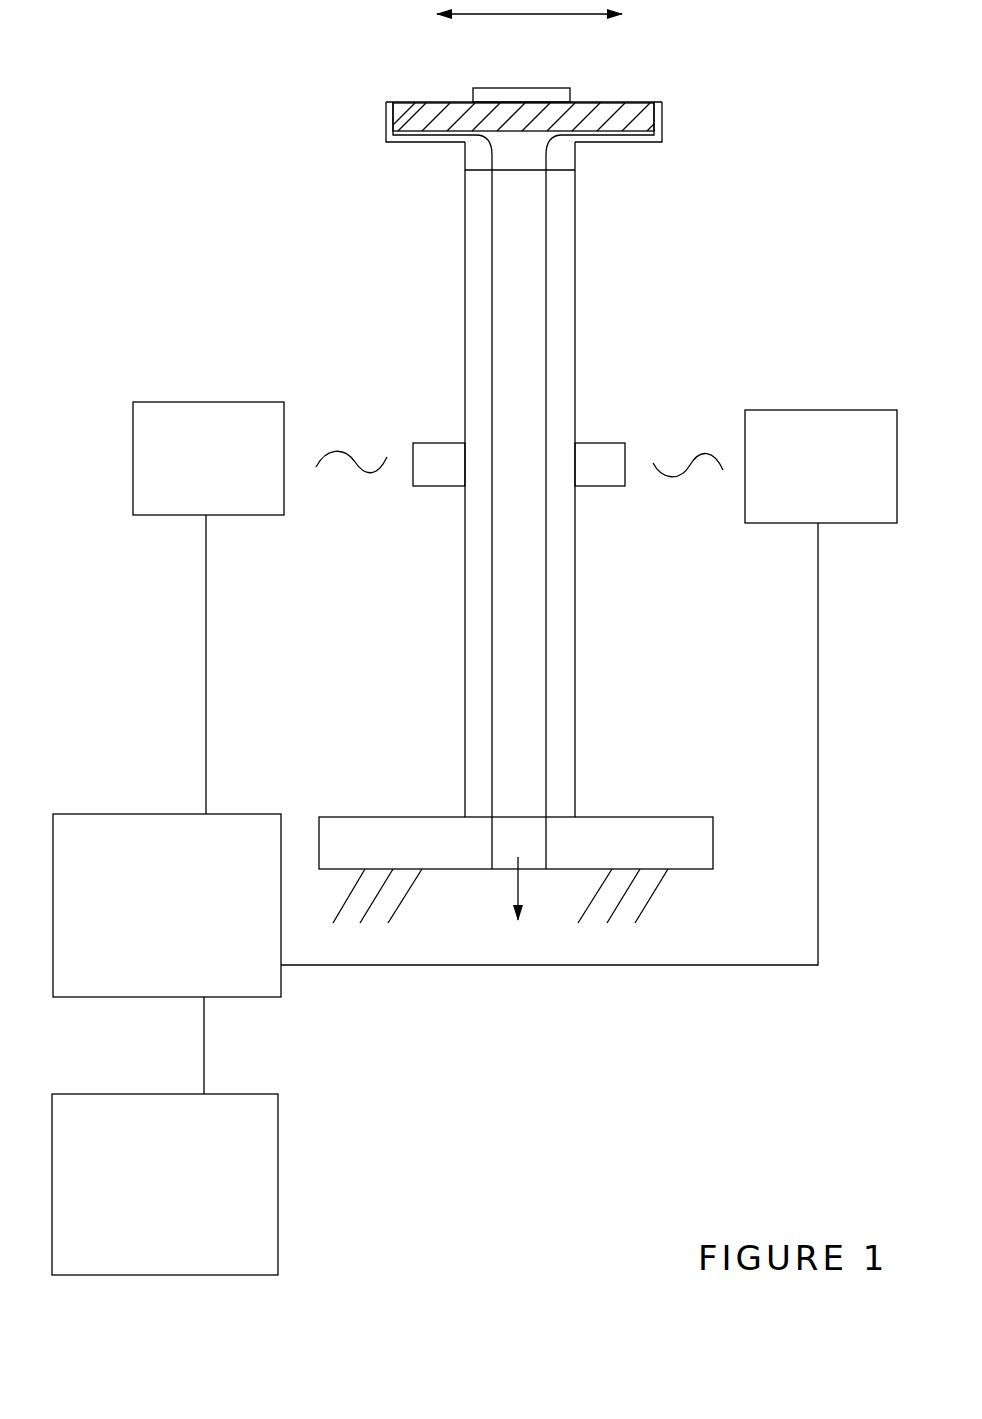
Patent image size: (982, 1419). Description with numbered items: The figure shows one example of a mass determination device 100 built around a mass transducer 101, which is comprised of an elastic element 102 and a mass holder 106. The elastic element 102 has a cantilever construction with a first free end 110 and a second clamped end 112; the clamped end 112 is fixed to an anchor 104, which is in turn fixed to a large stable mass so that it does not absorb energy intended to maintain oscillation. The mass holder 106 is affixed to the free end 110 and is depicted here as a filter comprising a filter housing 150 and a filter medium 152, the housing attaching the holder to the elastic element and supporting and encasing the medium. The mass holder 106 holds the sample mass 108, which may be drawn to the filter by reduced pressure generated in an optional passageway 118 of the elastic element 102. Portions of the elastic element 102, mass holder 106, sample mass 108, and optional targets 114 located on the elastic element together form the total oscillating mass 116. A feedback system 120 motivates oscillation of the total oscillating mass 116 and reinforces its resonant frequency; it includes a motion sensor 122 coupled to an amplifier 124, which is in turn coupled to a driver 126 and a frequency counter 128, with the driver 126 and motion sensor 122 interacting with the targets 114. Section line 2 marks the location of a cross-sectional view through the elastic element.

The mass determination device 100 is at (138, 33).
The mass transducer 101 is at (432, 310).
The elastic element 102 is at (580, 230).
The anchor 104 is at (674, 815).
The mass holder 106 is at (684, 107).
The sample mass 108 is at (549, 86).
The first free end 110 is at (440, 177).
The second clamped end 112 is at (453, 808).
The target 114 is at (426, 441).
The total oscillating mass 116 is at (722, 293).
The passageway 118 is at (528, 148).
The feedback system 120 is at (697, 972).
The motion sensor 122 is at (809, 408).
The amplifier 124 is at (106, 812).
The driver 126 is at (166, 399).
The frequency counter 128 is at (105, 1092).
The filter housing 150 is at (386, 135).
The filter medium 152 is at (404, 101).
The section line 2- 2 is at (443, 552).